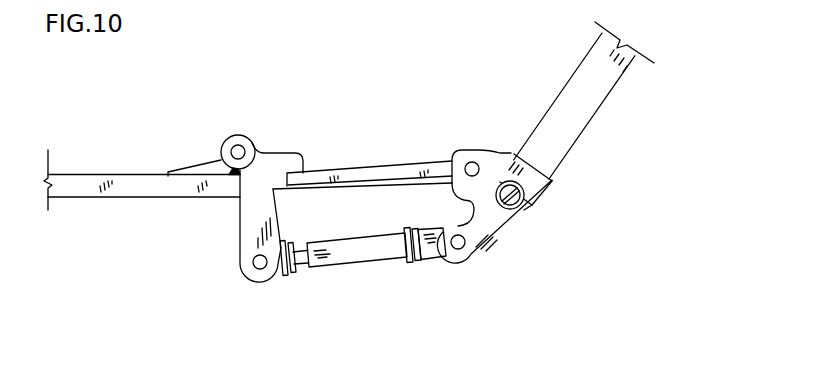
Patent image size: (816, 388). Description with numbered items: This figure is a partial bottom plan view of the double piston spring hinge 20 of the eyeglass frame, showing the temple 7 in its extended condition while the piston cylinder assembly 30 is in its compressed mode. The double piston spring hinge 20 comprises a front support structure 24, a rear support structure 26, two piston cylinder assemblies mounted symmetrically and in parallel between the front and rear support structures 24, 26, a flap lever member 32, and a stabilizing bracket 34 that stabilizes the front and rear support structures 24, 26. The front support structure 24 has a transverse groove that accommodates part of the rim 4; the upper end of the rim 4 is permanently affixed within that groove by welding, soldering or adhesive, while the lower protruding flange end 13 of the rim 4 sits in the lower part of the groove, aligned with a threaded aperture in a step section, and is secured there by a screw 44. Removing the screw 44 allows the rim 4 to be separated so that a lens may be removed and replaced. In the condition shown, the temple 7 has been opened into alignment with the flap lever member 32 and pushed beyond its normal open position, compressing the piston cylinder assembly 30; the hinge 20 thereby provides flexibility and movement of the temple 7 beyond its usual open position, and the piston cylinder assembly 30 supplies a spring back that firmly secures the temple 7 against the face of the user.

The rim 4 is at (587, 68).
The temple 7 is at (78, 186).
The lower protruding flange end 13 is at (511, 150).
The double piston spring hinge 20 is at (389, 220).
The front support structure 24 is at (492, 233).
The rear support structure 26 is at (248, 219).
The piston cylinder assembly 30 is at (363, 258).
The flap lever member 32 is at (212, 165).
The stabilizing bracket 34 is at (394, 172).
The screw 44 is at (527, 210).